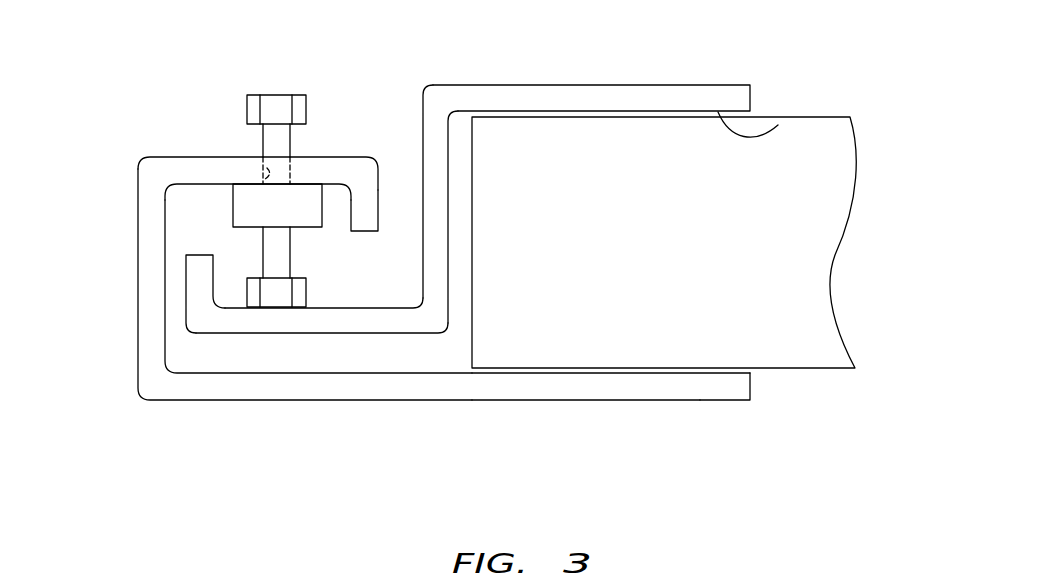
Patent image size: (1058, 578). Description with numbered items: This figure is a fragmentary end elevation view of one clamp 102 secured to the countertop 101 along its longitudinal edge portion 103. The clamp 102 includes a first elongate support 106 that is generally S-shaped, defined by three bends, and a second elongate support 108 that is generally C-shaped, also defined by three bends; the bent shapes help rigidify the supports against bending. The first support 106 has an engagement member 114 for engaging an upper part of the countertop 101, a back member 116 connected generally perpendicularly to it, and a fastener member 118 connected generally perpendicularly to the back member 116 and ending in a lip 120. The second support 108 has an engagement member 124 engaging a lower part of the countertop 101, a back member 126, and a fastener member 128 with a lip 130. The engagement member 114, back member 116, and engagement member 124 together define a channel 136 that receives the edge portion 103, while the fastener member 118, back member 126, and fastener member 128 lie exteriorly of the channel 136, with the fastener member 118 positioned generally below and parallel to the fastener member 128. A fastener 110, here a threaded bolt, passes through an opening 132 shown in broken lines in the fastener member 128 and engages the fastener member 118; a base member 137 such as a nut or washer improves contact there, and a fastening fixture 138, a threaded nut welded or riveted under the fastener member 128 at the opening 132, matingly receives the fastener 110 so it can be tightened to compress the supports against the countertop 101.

The countertop 101 is at (879, 173).
The clamp 102 is at (96, 114).
The longitudinal edge portion 103 is at (459, 363).
The first elongate support 106 is at (520, 85).
The second elongate support 108 is at (532, 409).
The fastener 110 is at (265, 98).
The engagement member 114 is at (638, 92).
The back member 116 is at (438, 225).
The fastener member 118 is at (353, 328).
The lip 120 is at (193, 323).
The engagement member 124 is at (712, 393).
The back member 126 is at (148, 326).
The fastener member 128 is at (177, 162).
The lip 130 is at (373, 183).
The opening 132 is at (267, 170).
The channel 136 is at (778, 125).
The base member 137 is at (273, 302).
The fastening fixture 138 is at (242, 216).